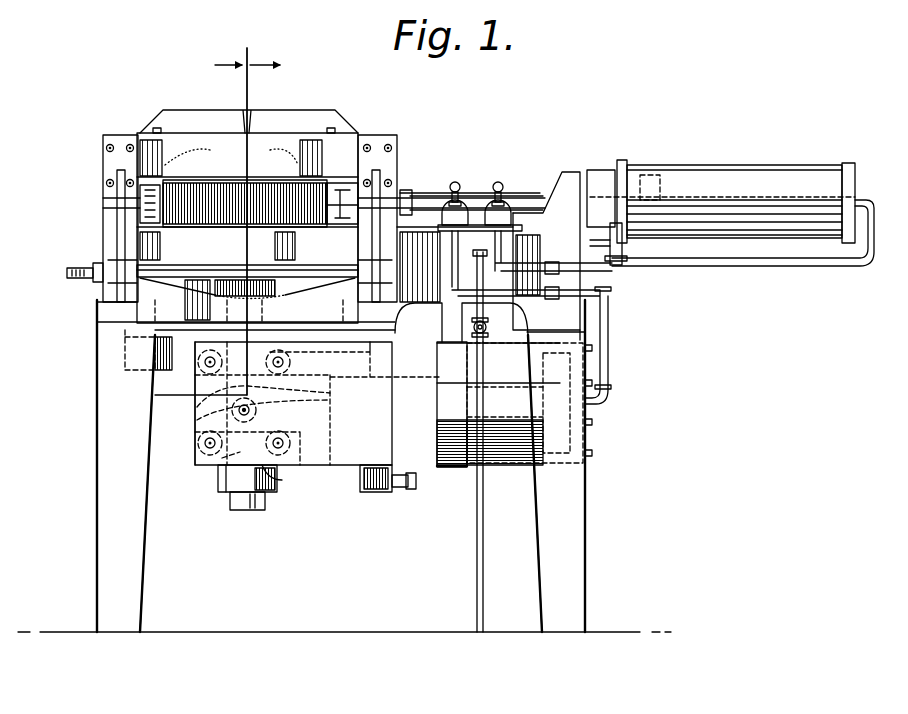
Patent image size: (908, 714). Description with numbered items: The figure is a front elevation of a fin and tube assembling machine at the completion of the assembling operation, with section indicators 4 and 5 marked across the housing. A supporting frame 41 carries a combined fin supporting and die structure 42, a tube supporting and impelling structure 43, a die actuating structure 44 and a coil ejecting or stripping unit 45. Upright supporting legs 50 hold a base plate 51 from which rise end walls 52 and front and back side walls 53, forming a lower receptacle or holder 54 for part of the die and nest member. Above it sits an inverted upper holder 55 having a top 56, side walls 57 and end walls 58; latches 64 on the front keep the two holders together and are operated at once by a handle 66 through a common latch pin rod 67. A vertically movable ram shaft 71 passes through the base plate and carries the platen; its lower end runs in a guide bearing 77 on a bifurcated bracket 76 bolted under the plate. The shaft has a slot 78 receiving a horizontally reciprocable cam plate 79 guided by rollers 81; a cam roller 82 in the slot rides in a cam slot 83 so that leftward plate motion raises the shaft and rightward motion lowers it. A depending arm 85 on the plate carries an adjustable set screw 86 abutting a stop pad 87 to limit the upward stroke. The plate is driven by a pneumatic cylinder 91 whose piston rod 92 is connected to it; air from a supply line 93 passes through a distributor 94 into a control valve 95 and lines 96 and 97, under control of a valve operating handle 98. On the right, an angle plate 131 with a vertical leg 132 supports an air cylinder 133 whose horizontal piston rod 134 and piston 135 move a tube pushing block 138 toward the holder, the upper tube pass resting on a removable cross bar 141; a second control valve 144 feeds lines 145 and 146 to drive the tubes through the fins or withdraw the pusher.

The supporting frame 41 is at (95, 414).
The combined fin supporting and die structure 42 is at (142, 200).
The tube supporting and impelling structure 43 is at (606, 168).
The die actuating structure 44 is at (331, 470).
The coil ejecting or stripping unit 45 is at (122, 352).
The upright supporting legs 50 is at (100, 522).
The base plate 51 is at (100, 328).
The end walls 52 is at (97, 303).
The front and back side walls 53 is at (217, 275).
The lower receptacle or holder 54 is at (320, 316).
The upper receptacle or holder 55 is at (191, 110).
The top 56 is at (286, 128).
The side walls 57 is at (231, 158).
The end walls 58 is at (103, 157).
The latches 64 is at (121, 232).
The handle 66 is at (90, 268).
The common latch pin rod 67 is at (306, 265).
The ram shaft 71 is at (232, 498).
The bifurcated bracket 76 is at (433, 466).
The guide bearing 77 is at (220, 483).
The longitudinal slot 78 is at (222, 456).
The cam plate 79 is at (196, 428).
The rollers 81 is at (291, 362).
The cam roller 82 is at (233, 412).
The cam slot 83 is at (332, 400).
The depending arm 85 is at (375, 492).
The adjustable set screw 86 is at (407, 490).
The stop pad 87 is at (283, 478).
The pneumatic cylinder 91 is at (525, 404).
The piston rod 92 is at (481, 404).
The supply line 93 is at (484, 520).
The distributor 94 is at (445, 244).
The control valve 95 is at (450, 212).
The line 96 is at (612, 330).
The line 97 is at (452, 324).
The valve operating handle 98 is at (462, 184).
The angle plate 131 is at (549, 271).
The vertical leg 132 is at (570, 172).
The air cylinder 133 is at (735, 170).
The piston rod 134 is at (535, 196).
The piston 135 is at (648, 175).
The tube pushing block 138 is at (344, 183).
The removable cross bar 141 is at (322, 186).
The control valve 144 is at (498, 212).
The line 145 is at (616, 258).
The line 146 is at (768, 268).
The section line 4 is at (217, 222).
The section line 5 is at (182, 421).